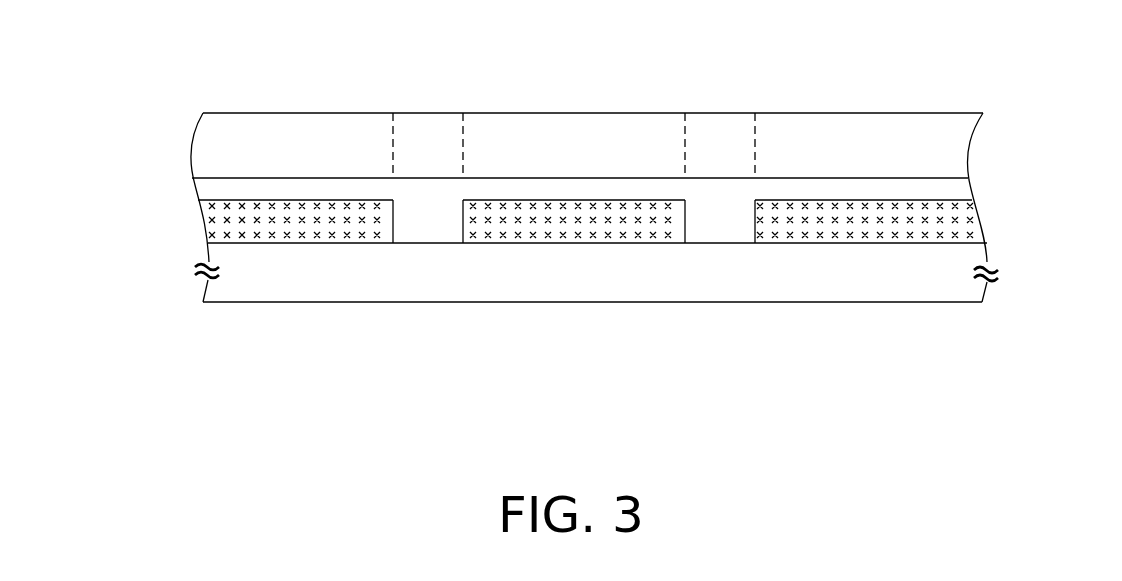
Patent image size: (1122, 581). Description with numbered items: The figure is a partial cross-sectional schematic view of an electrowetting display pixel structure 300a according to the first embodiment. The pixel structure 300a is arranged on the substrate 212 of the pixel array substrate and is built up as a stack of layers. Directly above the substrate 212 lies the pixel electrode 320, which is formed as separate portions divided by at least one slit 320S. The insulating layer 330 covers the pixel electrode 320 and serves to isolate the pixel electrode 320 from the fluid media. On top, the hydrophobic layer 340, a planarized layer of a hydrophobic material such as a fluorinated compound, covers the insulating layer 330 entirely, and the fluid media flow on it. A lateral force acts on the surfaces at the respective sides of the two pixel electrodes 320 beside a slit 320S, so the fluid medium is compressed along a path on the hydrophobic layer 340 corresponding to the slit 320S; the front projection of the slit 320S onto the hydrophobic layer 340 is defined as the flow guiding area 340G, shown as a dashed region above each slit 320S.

The electrowetting display pixel structure 300a is at (87, 128).
The substrate 212 is at (208, 254).
The pixel electrode 320 is at (208, 223).
The slit 320S is at (419, 213).
The insulating layer 330 is at (204, 192).
The hydrophobic layer 340 is at (205, 148).
The flow guiding area 340G is at (424, 142).